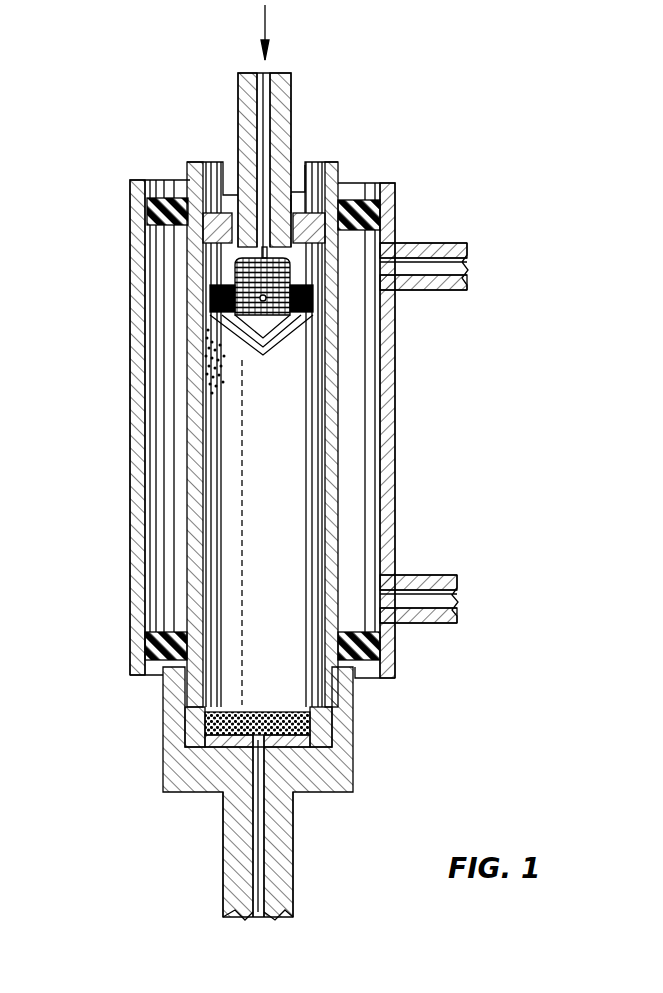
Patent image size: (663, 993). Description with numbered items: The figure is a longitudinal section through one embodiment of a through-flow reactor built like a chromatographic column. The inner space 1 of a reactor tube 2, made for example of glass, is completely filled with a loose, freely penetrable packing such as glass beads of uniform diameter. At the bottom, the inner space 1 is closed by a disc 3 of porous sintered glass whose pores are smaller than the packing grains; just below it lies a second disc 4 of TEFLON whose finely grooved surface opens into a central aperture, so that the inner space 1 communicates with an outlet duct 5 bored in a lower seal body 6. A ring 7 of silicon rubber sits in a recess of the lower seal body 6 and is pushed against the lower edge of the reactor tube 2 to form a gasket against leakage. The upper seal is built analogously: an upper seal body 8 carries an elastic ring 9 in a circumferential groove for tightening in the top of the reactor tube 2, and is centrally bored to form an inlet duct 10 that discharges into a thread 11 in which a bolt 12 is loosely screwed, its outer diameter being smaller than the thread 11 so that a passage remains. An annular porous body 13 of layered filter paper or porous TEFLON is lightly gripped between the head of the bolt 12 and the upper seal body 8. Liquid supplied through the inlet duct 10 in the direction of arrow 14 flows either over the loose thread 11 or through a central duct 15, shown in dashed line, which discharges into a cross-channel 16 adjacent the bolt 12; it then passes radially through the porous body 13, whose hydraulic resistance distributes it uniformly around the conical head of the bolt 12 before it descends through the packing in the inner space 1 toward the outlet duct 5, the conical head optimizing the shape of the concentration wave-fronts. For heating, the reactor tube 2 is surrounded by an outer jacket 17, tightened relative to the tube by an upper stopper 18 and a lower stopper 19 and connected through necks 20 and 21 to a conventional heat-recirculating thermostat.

The inner space 1 is at (290, 453).
The reactor tube 2 is at (337, 380).
The disc of porous material 3 is at (283, 720).
The disc 4 is at (302, 752).
The outlet duct 5 is at (260, 858).
The lower seal body 6 is at (283, 887).
The ring 7 is at (187, 735).
The upper seal body 8 is at (284, 127).
The elastic ring 9 is at (320, 170).
The inlet duct 10 is at (266, 103).
The thread 11 is at (236, 280).
The bolt 12 is at (253, 332).
The annular porous body 13 is at (212, 296).
The arrow 14 is at (266, 28).
The central duct 15 is at (235, 265).
The cross-channel 16 is at (277, 330).
The outer jacket 17 is at (135, 458).
The upper stopper 18 is at (348, 203).
The lower stopper 19 is at (372, 680).
The neck 20 is at (448, 268).
The neck 21 is at (437, 600).